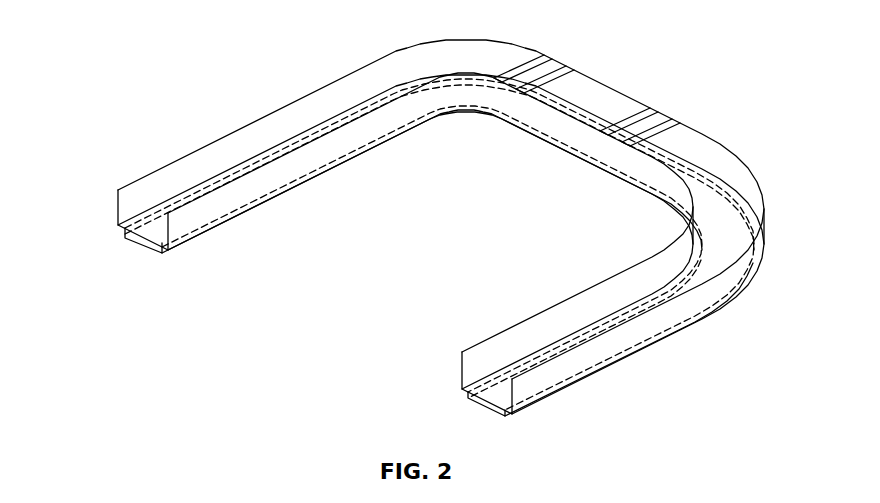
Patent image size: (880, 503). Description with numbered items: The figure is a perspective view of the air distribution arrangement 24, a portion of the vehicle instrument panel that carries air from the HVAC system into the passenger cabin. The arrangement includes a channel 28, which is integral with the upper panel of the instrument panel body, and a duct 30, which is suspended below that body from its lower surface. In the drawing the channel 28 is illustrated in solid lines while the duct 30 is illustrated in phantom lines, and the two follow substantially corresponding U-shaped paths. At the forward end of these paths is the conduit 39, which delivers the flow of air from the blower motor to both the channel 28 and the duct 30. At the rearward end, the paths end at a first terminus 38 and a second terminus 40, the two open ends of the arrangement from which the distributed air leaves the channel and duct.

The air distribution arrangement 24 is at (289, 54).
The channel 28 is at (729, 231).
The duct 30 is at (655, 344).
The terminus 38 is at (106, 213).
The conduit 39 is at (652, 126).
The terminus 40 is at (453, 371).